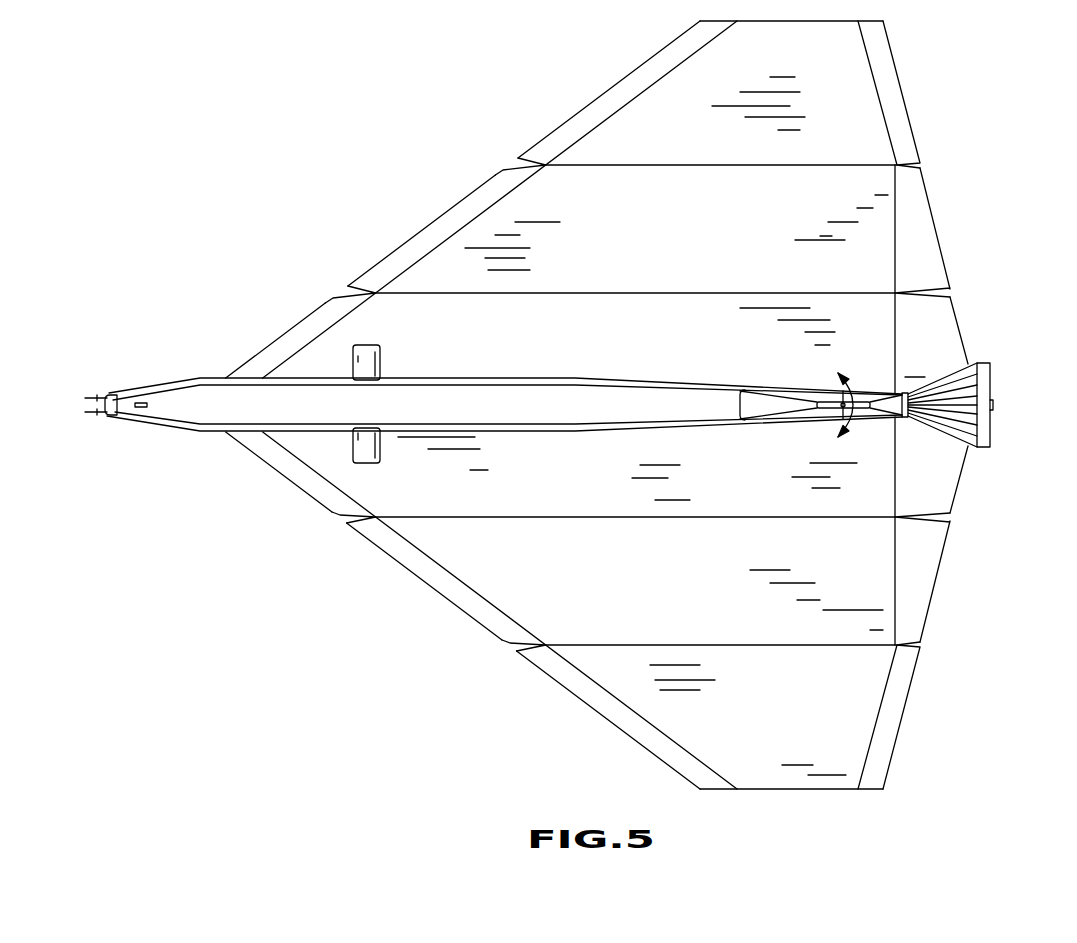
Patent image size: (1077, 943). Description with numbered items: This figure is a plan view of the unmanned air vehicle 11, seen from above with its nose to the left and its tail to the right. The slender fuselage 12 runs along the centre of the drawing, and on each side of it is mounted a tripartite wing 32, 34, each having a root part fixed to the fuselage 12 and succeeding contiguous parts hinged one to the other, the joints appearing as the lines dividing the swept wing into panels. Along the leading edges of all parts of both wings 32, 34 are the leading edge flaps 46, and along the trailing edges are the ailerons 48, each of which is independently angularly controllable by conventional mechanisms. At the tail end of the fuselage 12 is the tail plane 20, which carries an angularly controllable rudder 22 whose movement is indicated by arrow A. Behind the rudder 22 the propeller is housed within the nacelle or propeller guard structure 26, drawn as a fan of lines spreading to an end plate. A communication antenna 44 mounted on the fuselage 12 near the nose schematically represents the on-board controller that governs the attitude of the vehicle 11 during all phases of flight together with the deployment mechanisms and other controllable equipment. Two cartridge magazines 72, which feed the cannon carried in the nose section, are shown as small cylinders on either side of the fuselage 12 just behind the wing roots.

The unmanned air vehicle 11 is at (223, 127).
The fuselage 12 is at (197, 378).
The tail plane 20 is at (767, 408).
The rudder 22 is at (869, 397).
The propeller guard structure 26 is at (993, 370).
The wing 32 is at (421, 692).
The wing 34 is at (388, 130).
The communication antenna 44 is at (140, 402).
The leading edge flaps 46 is at (550, 141).
The ailerons 48 is at (900, 125).
The cartridge magazines 72 is at (368, 345).
The arrow A is at (848, 420).